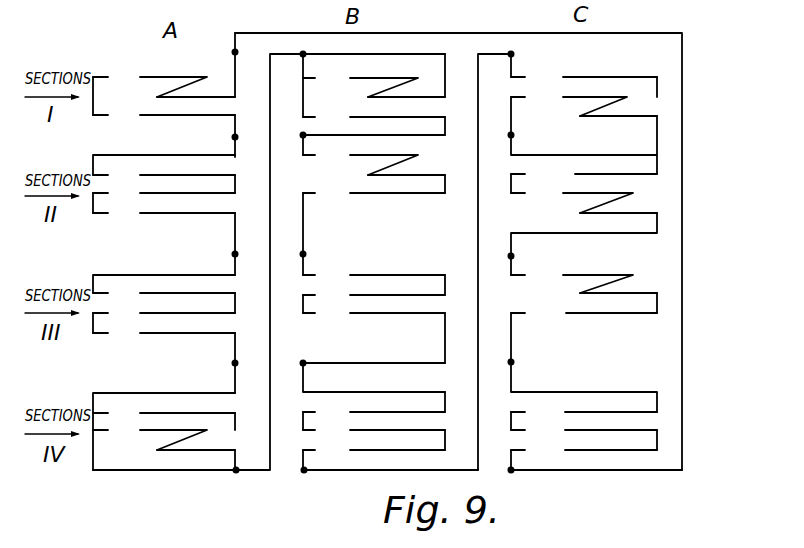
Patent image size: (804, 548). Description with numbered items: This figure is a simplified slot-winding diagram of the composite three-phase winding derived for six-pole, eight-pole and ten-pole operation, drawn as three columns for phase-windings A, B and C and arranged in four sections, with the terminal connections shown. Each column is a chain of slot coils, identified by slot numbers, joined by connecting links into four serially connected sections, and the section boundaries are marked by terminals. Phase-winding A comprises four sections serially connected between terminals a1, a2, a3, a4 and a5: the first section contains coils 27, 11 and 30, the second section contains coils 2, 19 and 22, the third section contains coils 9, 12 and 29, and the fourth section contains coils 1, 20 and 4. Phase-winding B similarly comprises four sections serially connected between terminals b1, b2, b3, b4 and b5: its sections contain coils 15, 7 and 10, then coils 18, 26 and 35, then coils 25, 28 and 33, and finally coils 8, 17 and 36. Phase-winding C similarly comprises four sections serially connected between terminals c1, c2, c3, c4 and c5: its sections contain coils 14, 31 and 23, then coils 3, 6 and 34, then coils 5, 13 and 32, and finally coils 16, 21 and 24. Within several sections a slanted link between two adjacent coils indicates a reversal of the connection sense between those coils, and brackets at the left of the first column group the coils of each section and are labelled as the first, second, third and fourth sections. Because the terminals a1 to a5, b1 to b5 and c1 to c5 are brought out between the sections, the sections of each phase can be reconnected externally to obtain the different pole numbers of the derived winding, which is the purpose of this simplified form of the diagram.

The coil 1 is at (164, 414).
The coil 2 is at (164, 176).
The coil 3 is at (584, 175).
The coil 4 is at (176, 452).
The coil 5 is at (572, 277).
The coil 6 is at (572, 196).
The coil 7 is at (386, 98).
The coil 8 is at (374, 413).
The coil 9 is at (164, 294).
The coil 10 is at (374, 118).
The coil 11 is at (176, 96).
The coil 12 is at (164, 314).
The coil 13 is at (596, 294).
The coil 14 is at (584, 78).
The coil 15 is at (360, 81).
The coil 16 is at (584, 413).
The coil 17 is at (374, 431).
The coil 18 is at (360, 158).
The coil 19 is at (164, 194).
The coil 20 is at (150, 433).
The coil 21 is at (584, 431).
The coil 22 is at (164, 214).
The coil 23 is at (596, 117).
The coil 24 is at (584, 451).
The coil 25 is at (374, 276).
The coil 26 is at (383, 176).
The coil 27 is at (150, 80).
The coil 28 is at (374, 296).
The coil 29 is at (164, 334).
The coil 30 is at (164, 116).
The coil 31 is at (569, 100).
The coil 32 is at (584, 314).
The coil 33 is at (374, 314).
The coil 34 is at (596, 214).
The coil 35 is at (374, 194).
The coil 36 is at (374, 451).
The terminal a1 is at (235, 52).
The terminal a2 is at (235, 137).
The terminal a3 is at (235, 254).
The terminal a4 is at (235, 363).
The terminal a5 is at (236, 470).
The terminal b1 is at (303, 54).
The terminal b2 is at (303, 135).
The terminal b3 is at (303, 254).
The terminal b4 is at (303, 363).
The terminal b5 is at (304, 470).
The terminal c1 is at (522, 50).
The terminal c2 is at (511, 135).
The terminal c3 is at (511, 256).
The terminal c4 is at (511, 362).
The terminal c5 is at (511, 470).